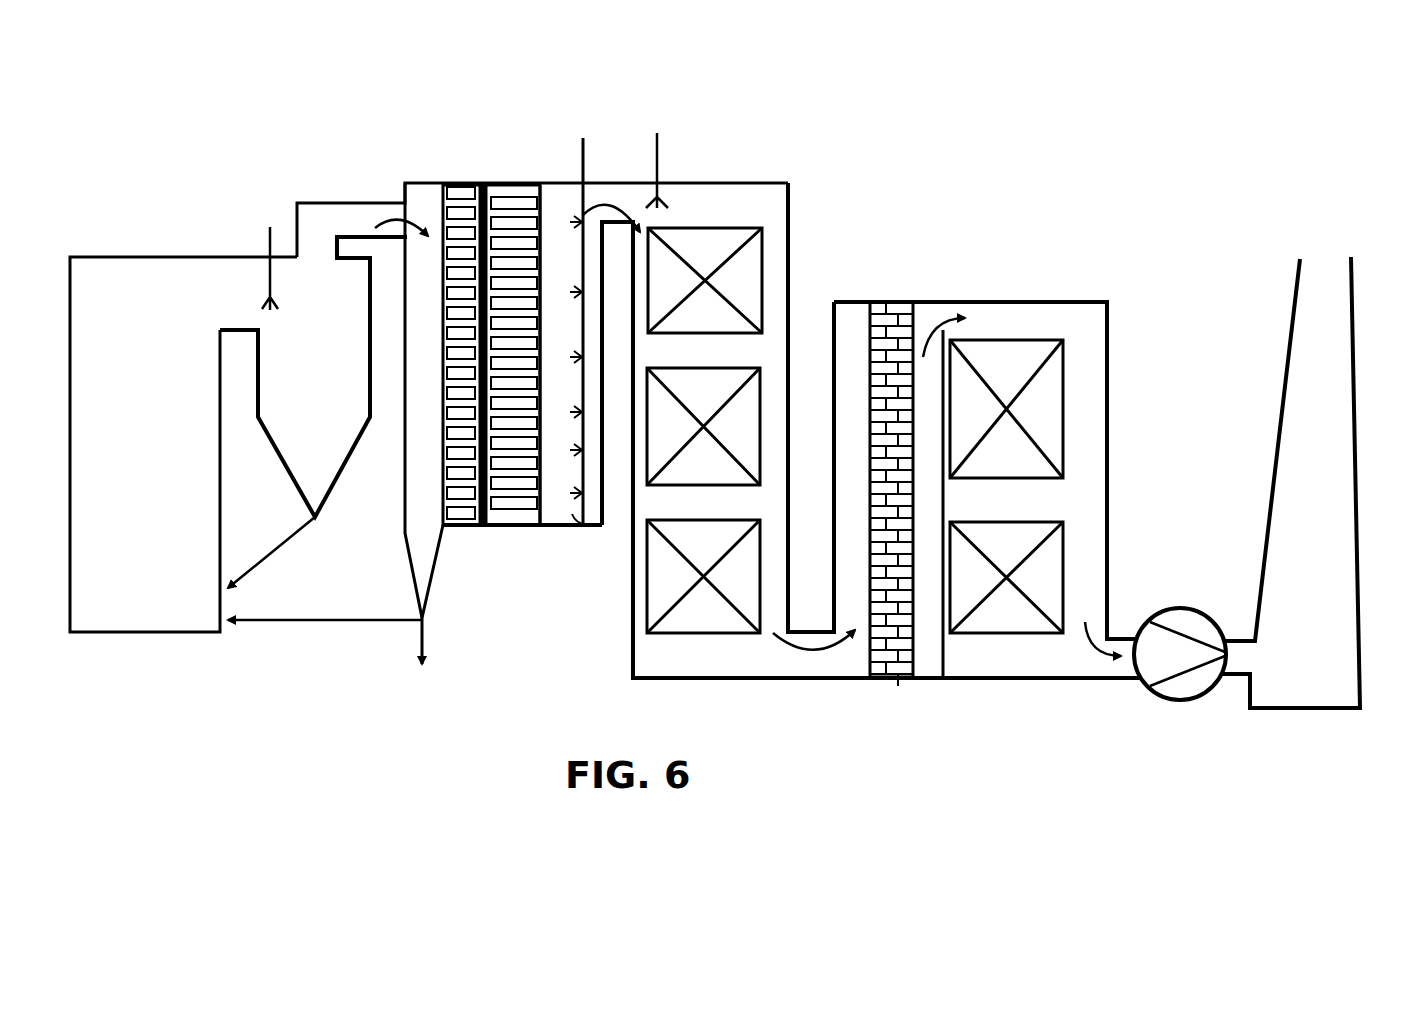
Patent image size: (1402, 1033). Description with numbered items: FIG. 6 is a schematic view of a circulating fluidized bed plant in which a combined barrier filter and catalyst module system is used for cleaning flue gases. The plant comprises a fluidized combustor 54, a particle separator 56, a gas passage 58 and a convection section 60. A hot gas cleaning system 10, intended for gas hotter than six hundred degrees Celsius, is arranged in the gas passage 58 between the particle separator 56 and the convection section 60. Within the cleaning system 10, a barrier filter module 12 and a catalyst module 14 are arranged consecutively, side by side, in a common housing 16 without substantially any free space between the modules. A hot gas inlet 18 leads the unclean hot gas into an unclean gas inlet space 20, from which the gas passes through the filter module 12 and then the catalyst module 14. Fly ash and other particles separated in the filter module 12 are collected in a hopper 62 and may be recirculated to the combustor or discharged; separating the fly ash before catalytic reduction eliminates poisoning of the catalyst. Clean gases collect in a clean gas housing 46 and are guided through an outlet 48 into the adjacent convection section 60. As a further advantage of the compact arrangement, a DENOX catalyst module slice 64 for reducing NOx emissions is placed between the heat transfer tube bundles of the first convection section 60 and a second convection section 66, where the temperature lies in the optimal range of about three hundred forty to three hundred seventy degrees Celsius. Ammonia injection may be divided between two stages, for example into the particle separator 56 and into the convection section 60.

The hot gas cleaning system 10 is at (458, 92).
The barrier filter module 12 is at (461, 185).
The catalyst module 14 is at (521, 185).
The housing 16 is at (547, 528).
The hot gas inlet 18 is at (364, 218).
The unclean gas inlet space 20 is at (425, 197).
The clean gas housing 46 is at (589, 527).
The outlet 48 is at (621, 192).
The fluidized combustor 54 is at (160, 407).
The particle separator 56 is at (328, 407).
The gas passage 58 is at (312, 232).
The convection section 60 is at (750, 217).
The hopper 62 is at (415, 541).
The DENOX catalyst module slice 64 is at (893, 306).
The second convection section 66 is at (1065, 312).